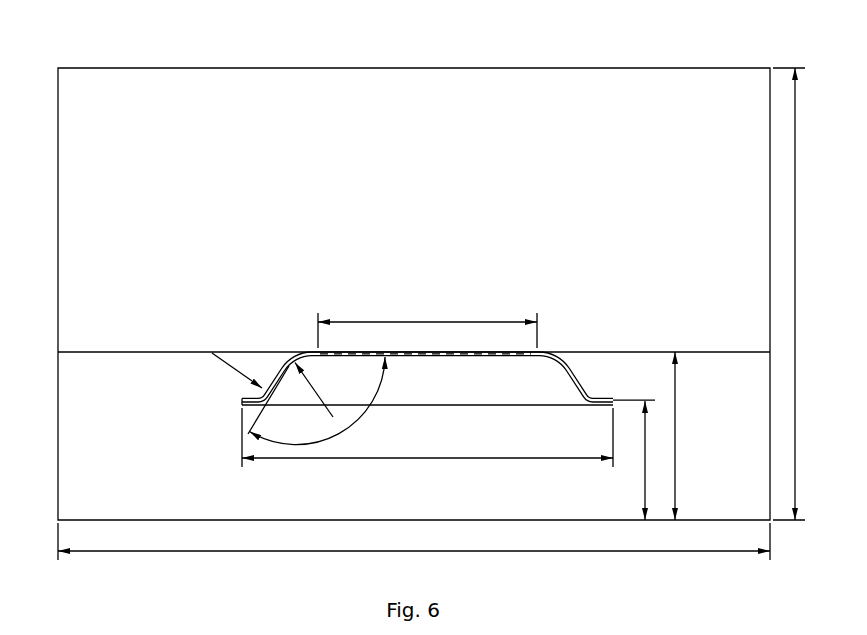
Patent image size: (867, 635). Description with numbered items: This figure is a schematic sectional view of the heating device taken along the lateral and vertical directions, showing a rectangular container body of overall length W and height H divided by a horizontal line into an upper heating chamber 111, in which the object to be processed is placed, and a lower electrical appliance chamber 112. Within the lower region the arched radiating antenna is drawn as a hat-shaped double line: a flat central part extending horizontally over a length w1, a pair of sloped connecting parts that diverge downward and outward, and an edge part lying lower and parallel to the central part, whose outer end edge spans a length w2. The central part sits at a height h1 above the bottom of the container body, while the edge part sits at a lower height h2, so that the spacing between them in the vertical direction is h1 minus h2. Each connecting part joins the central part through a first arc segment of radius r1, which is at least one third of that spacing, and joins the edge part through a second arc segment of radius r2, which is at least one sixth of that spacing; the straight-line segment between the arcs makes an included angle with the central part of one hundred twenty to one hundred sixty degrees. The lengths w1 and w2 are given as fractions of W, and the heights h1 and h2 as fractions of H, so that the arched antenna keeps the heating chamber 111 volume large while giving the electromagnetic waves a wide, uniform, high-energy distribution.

The heating chamber 111 is at (617, 93).
The electrical appliance chamber 112 is at (82, 418).
The height of the container body H is at (789, 294).
The length of the cross section W is at (414, 541).
The length of the central part w1 is at (427, 322).
The length of the outer end edge of the edge part w2 is at (427, 437).
The height of the central part h1 is at (663, 436).
The height of the edge part h2 is at (634, 460).
The radius of the first arc segment r1 is at (314, 390).
The radius of the second arc segment r2 is at (237, 370).